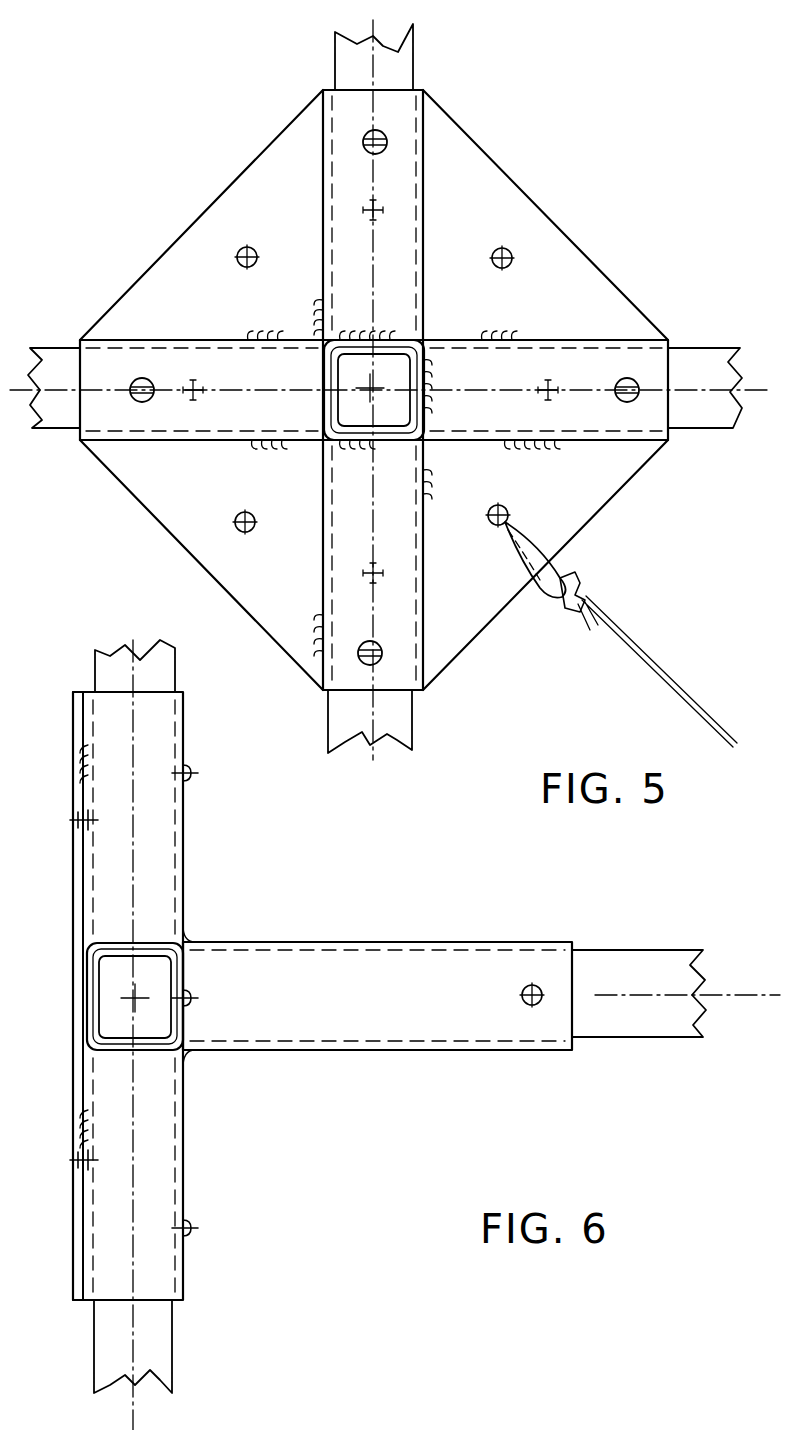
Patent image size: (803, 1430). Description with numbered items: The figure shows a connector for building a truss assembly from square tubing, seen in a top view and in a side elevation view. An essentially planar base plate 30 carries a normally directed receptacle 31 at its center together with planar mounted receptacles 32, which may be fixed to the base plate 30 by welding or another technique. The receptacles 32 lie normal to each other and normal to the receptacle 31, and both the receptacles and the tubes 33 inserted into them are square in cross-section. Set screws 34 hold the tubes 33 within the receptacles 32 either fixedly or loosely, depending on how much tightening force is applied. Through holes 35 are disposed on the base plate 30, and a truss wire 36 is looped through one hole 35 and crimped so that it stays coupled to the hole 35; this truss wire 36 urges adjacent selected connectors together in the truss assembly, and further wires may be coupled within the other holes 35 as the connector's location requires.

In FIG. 5, the base plate 30 is at (208, 572).
In FIG. 6, the base plate 30 is at (73, 900).
In FIG. 5, the normally directed receptacle 31 is at (343, 338).
In FIG. 6, the normally directed receptacle 31 is at (325, 1052).
In FIG. 5, the planar mounted receptacles 32 is at (231, 338).
In FIG. 6, the planar mounted receptacles 32 is at (185, 892).
In FIG. 5, the tubes 33 is at (350, 67).
In FIG. 6, the tubes 33 is at (95, 672).
In FIG. 5, the set screws 34 is at (380, 133).
In FIG. 6, the set screws 34 is at (195, 774).
In FIG. 5, the through holes 35 is at (238, 250).
In FIG. 6, the through holes 35 is at (72, 820).
In FIG. 5, the truss wire 36 is at (565, 560).